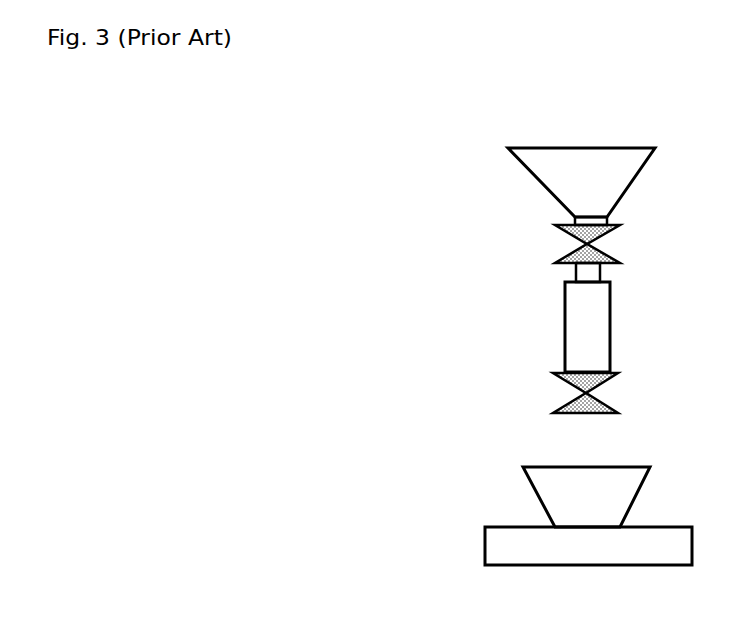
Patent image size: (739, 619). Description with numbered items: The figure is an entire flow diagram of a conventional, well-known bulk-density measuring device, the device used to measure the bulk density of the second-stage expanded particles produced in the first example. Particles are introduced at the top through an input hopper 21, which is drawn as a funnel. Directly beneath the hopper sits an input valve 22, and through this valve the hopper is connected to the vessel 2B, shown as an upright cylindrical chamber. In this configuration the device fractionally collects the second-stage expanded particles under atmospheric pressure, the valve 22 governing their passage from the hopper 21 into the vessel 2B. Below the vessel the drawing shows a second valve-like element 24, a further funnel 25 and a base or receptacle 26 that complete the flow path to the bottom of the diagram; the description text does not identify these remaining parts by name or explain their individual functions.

The input hopper 21 is at (515, 142).
The input valve 22 is at (558, 234).
The vessel 2B is at (548, 324).
The lower valve 24 is at (556, 398).
The receiving funnel 25 is at (488, 485).
The base / container 26 is at (460, 541).